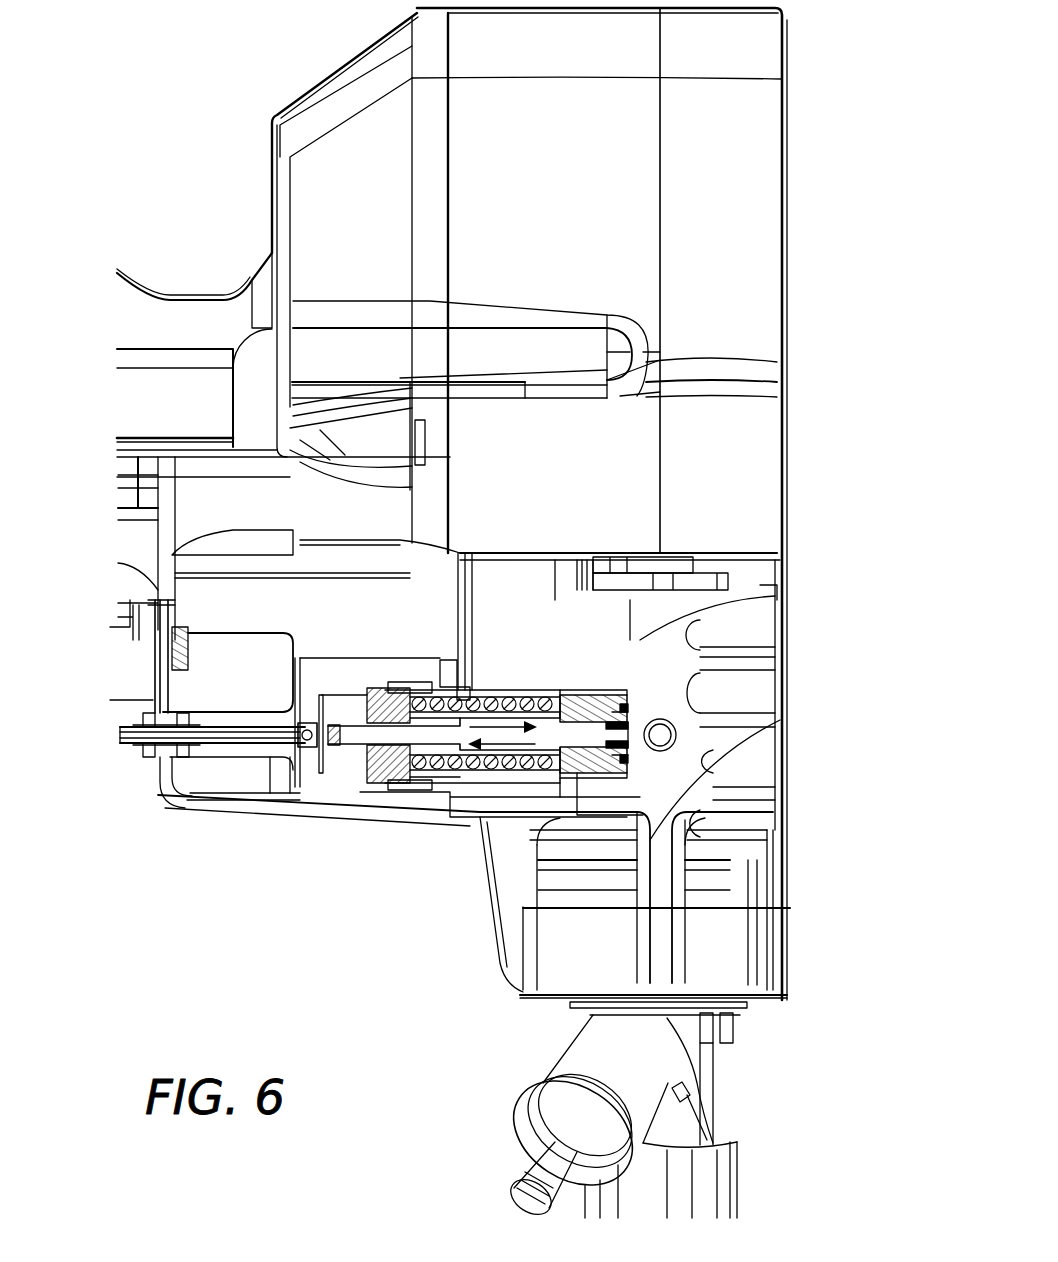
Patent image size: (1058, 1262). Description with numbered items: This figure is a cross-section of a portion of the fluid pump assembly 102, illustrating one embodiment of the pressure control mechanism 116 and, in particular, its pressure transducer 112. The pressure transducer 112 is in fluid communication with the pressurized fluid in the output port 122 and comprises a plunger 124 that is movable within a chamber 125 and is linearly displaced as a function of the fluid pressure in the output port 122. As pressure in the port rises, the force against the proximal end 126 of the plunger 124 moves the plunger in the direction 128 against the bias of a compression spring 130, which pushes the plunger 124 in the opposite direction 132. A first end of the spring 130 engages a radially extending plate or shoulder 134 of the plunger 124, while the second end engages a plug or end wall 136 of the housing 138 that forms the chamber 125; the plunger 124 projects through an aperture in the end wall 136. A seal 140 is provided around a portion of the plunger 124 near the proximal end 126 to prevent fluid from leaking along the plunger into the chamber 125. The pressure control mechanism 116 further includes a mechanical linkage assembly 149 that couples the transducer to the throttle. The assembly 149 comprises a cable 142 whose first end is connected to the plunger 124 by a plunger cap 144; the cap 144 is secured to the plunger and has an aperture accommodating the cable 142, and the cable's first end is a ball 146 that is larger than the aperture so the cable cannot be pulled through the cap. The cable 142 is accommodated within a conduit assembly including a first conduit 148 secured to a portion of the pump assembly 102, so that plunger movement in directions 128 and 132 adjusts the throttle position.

The fluid pump assembly 102 is at (802, 276).
The pressure transducer 112 is at (350, 773).
The pressure control mechanism 116 is at (85, 720).
The output port 122 is at (660, 735).
The plunger 124 is at (460, 693).
The chamber 125 is at (477, 695).
The proximal end 126 is at (628, 735).
The direction 128 is at (556, 700).
The compression spring 130 is at (520, 694).
The opposite direction 132 is at (472, 720).
The radially extending plate or shoulder 134 is at (563, 692).
The plug or end wall 136 is at (385, 700).
The housing 138 is at (402, 688).
The seal 140 is at (622, 720).
The cable 142 is at (228, 732).
The plunger cap 144 is at (308, 722).
The ball 146 is at (300, 737).
The first conduit 148 is at (128, 726).
The mechanical linkage assembly 149 is at (122, 760).